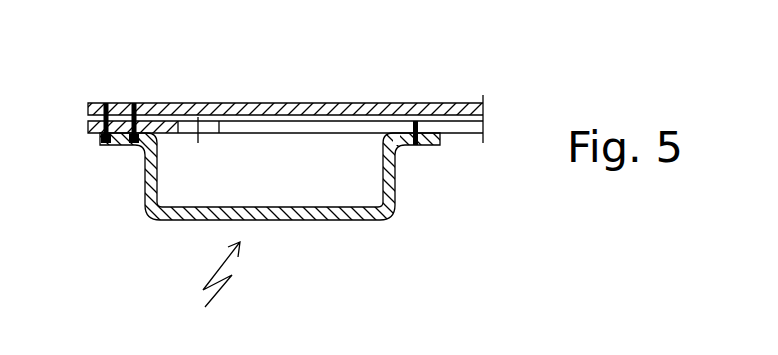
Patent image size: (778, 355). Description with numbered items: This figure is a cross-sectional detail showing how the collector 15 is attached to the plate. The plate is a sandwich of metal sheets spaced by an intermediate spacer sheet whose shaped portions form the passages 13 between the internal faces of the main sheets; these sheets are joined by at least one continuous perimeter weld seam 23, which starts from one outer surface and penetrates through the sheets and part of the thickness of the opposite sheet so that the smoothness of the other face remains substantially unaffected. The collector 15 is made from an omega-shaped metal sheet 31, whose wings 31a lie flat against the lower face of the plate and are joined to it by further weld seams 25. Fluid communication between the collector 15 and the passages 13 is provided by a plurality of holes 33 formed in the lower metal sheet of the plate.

The passages 13 is at (316, 118).
The holes 33 is at (208, 130).
The perimeter weld seam 23 is at (107, 104).
The omega-shaped metal sheet 31 is at (328, 213).
The wings 31a is at (110, 147).
The weld seams 25 is at (119, 147).
The collector 15 is at (215, 291).